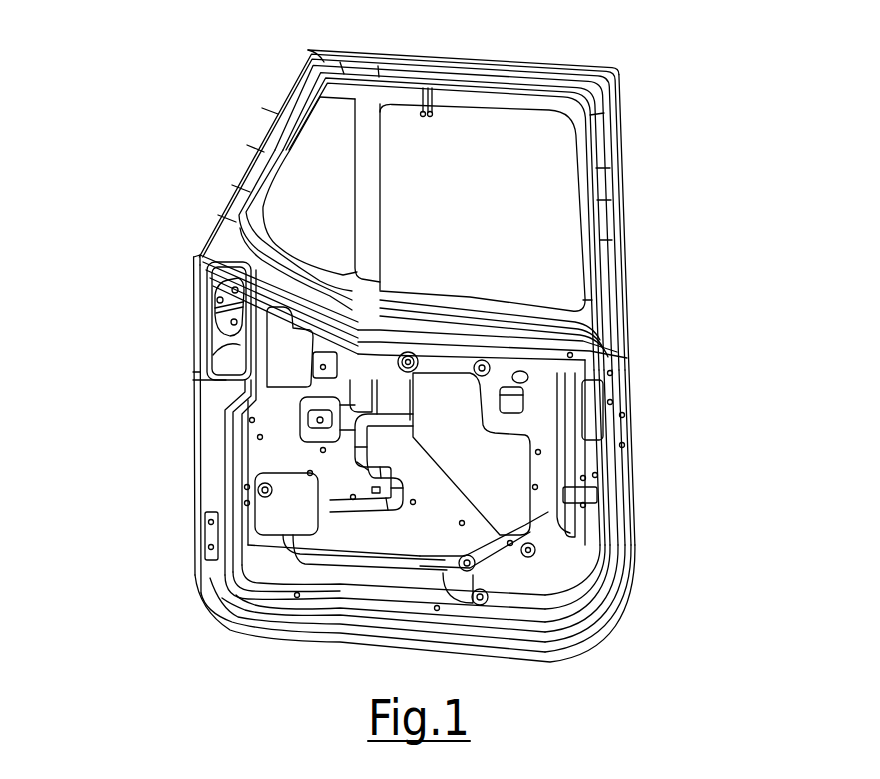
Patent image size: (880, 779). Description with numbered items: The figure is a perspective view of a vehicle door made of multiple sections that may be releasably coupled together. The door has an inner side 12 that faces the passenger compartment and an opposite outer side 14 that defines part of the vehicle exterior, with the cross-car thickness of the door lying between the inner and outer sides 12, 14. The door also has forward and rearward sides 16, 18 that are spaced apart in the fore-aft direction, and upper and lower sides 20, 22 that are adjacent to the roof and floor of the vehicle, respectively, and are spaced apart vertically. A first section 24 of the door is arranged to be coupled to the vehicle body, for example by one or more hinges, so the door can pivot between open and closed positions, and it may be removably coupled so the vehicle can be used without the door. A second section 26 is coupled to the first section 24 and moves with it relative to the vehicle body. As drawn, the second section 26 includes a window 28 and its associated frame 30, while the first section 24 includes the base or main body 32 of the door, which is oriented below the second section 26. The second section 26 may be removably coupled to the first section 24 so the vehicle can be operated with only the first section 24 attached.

The inner side 12 is at (345, 533).
The outer side 14 is at (633, 363).
The forward side 16 is at (195, 388).
The rearward side 18 is at (634, 410).
The upper side 20 is at (446, 58).
The lower side 22 is at (530, 662).
The first section 24 is at (641, 501).
The second section 26 is at (636, 256).
The window 28 is at (543, 202).
The frame 30 is at (537, 105).
The main body 32 is at (211, 477).